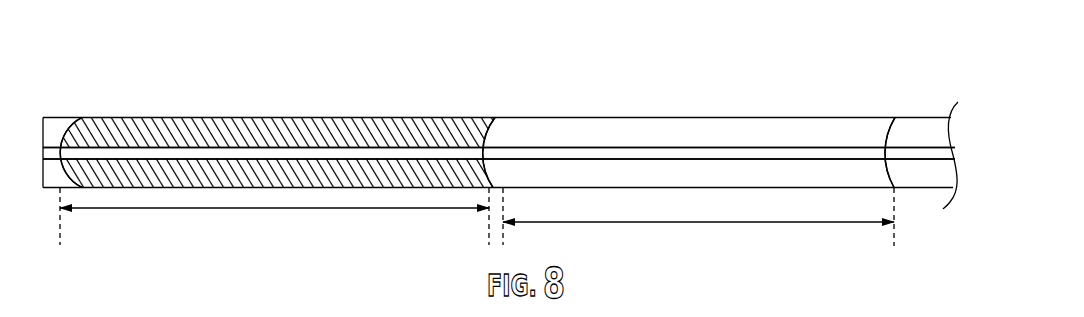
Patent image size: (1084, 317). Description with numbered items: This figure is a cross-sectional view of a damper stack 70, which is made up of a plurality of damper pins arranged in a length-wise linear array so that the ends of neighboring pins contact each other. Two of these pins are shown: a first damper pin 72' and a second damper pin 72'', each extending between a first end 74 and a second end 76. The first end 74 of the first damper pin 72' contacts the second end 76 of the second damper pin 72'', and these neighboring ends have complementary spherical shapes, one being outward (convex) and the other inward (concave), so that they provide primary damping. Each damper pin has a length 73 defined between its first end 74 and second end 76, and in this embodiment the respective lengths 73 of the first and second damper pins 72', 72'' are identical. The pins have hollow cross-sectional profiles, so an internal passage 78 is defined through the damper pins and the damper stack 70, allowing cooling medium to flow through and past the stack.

The damper stack 70 is at (814, 82).
The first damper pin 72' is at (788, 113).
The second damper pin 72'' is at (277, 112).
The length 73 is at (253, 208).
The first end 74 is at (86, 132).
The second end 76 is at (477, 124).
The internal passage 78 is at (223, 151).